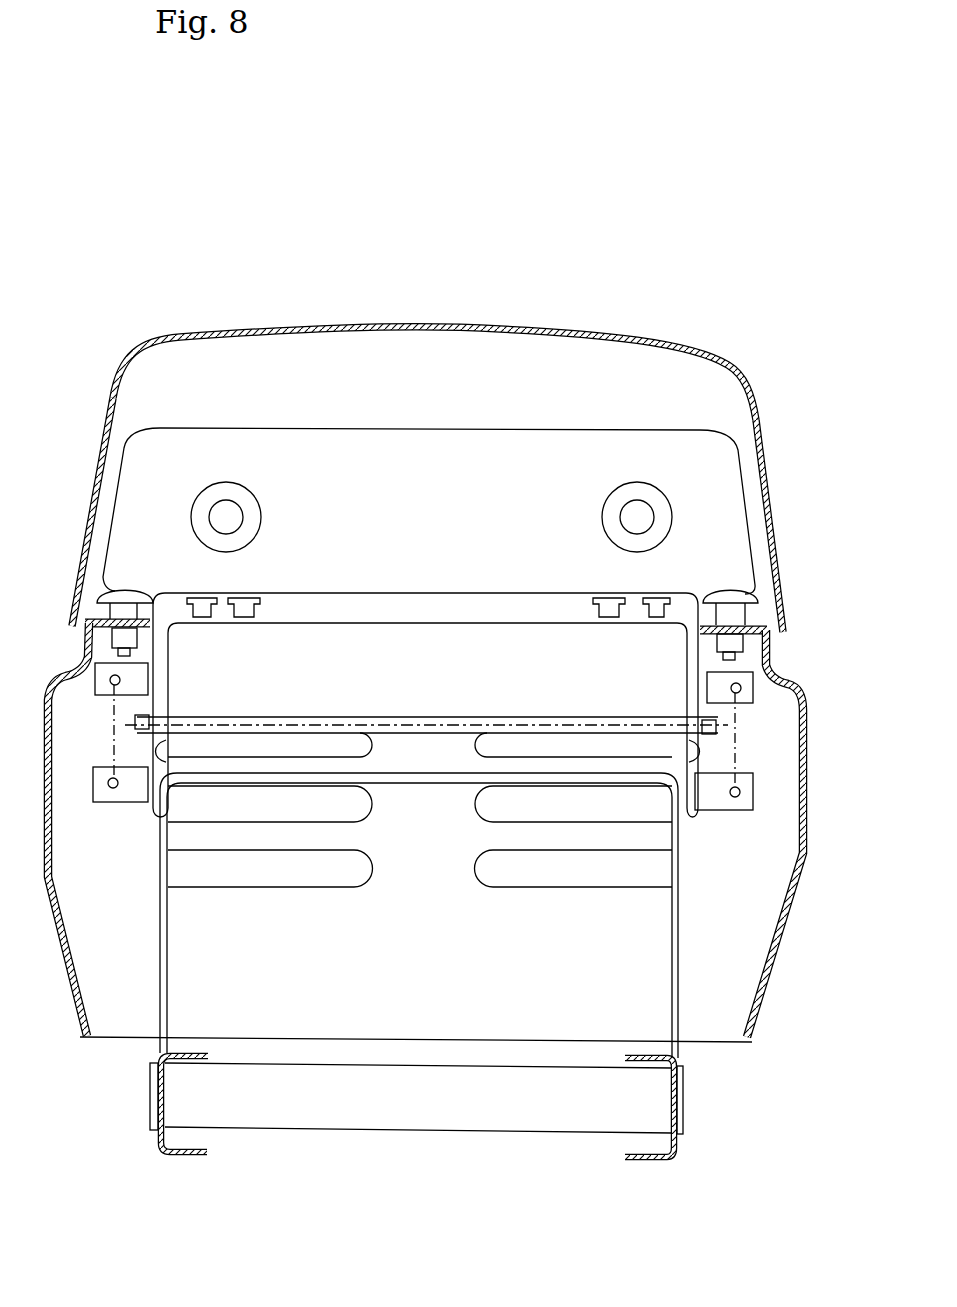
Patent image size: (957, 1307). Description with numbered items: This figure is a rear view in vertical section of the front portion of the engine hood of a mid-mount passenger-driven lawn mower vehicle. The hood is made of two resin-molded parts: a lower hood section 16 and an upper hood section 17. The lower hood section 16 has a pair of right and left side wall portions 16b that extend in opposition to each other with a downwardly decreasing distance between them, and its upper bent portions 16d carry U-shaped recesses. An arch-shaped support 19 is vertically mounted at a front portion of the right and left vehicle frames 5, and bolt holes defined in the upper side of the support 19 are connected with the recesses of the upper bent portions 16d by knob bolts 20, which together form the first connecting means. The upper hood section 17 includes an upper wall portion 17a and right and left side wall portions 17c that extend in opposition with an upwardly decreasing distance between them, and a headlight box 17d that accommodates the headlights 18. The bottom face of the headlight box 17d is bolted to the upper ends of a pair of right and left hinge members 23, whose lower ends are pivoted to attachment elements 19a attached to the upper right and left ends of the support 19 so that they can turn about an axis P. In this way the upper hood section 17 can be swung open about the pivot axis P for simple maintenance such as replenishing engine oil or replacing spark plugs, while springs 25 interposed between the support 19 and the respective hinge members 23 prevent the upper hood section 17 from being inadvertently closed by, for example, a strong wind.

The vehicle frames 5 is at (168, 1158).
The lower hood section 16 is at (432, 802).
The side wall portions 16b is at (55, 883).
The upper bent portions 16d is at (102, 617).
The upper hood section 17 is at (437, 438).
The upper wall portion 17a is at (470, 331).
The side wall portions 17c is at (99, 455).
The headlight box 17d is at (367, 430).
The headlights 18 is at (218, 512).
The arch-shaped support 19 is at (168, 953).
The attachment elements 19a is at (426, 694).
The knob bolts 20 is at (130, 595).
The hinge members 23 is at (170, 598).
The springs 25 is at (112, 703).
The axis P is at (425, 728).